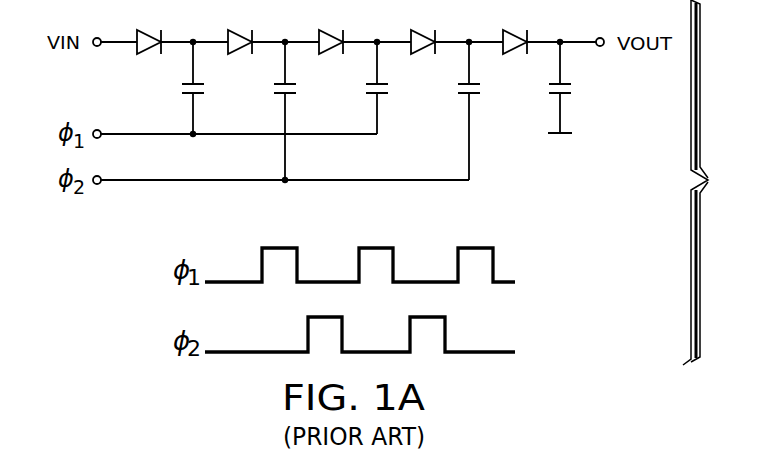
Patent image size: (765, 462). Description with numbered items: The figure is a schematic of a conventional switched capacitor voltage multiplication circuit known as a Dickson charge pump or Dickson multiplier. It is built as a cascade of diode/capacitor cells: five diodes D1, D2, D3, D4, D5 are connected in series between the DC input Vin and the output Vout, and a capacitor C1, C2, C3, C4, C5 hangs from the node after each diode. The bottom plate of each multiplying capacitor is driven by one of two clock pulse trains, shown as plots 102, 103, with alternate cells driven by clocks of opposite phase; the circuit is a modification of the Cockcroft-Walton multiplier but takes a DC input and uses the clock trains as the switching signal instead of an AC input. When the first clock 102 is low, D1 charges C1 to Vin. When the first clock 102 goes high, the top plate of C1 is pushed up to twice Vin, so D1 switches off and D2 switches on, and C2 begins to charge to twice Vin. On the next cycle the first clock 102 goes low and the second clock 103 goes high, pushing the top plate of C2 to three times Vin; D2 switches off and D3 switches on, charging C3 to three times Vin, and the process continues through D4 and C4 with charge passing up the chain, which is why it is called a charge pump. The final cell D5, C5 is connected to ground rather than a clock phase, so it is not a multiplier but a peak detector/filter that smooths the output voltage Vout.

The clock pulse train Φ1 102 is at (233, 281).
The clock pulse train Φ2 103 is at (257, 350).
The diode D1 is at (149, 29).
The diode D2 is at (240, 29).
The diode D3 is at (331, 29).
The diode D4 is at (423, 29).
The diode D5 is at (515, 29).
The capacitor C1 is at (209, 88).
The capacitor C2 is at (301, 111).
The capacitor C3 is at (393, 88).
The capacitor C4 is at (485, 111).
The capacitor C5 is at (576, 87).